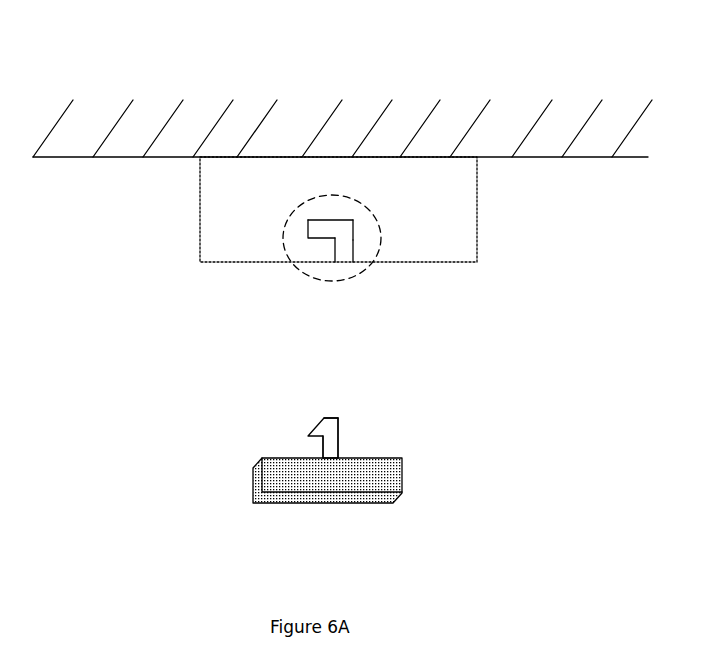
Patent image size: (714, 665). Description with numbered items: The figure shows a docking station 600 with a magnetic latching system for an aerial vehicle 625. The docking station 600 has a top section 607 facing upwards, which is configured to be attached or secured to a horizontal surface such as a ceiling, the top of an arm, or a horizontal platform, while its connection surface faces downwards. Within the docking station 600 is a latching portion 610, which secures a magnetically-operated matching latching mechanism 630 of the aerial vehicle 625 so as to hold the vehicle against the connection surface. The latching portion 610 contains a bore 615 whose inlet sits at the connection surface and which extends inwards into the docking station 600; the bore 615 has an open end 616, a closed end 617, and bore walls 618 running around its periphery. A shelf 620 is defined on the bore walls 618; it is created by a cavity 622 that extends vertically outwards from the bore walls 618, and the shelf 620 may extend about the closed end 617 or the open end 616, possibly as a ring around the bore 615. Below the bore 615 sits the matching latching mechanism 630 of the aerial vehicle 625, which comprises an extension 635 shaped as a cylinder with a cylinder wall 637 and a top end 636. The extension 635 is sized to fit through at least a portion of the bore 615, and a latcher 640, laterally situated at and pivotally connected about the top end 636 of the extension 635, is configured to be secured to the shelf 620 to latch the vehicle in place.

The docking station 600 is at (235, 205).
The top section 607 is at (323, 157).
The latching portion 610 is at (382, 242).
The bore 615 is at (340, 277).
The open end 616 is at (352, 260).
The closed end 617 is at (353, 220).
The bore walls 618 is at (353, 245).
The shelf 620 is at (327, 240).
The cavity 622 is at (320, 230).
The aerial vehicle 625 is at (245, 508).
The magnetically-operated matching latching mechanism 630 is at (503, 445).
The extension 635 is at (337, 457).
The top end 636 is at (340, 413).
The cylinder wall 637 is at (342, 445).
The latcher 640 is at (330, 430).